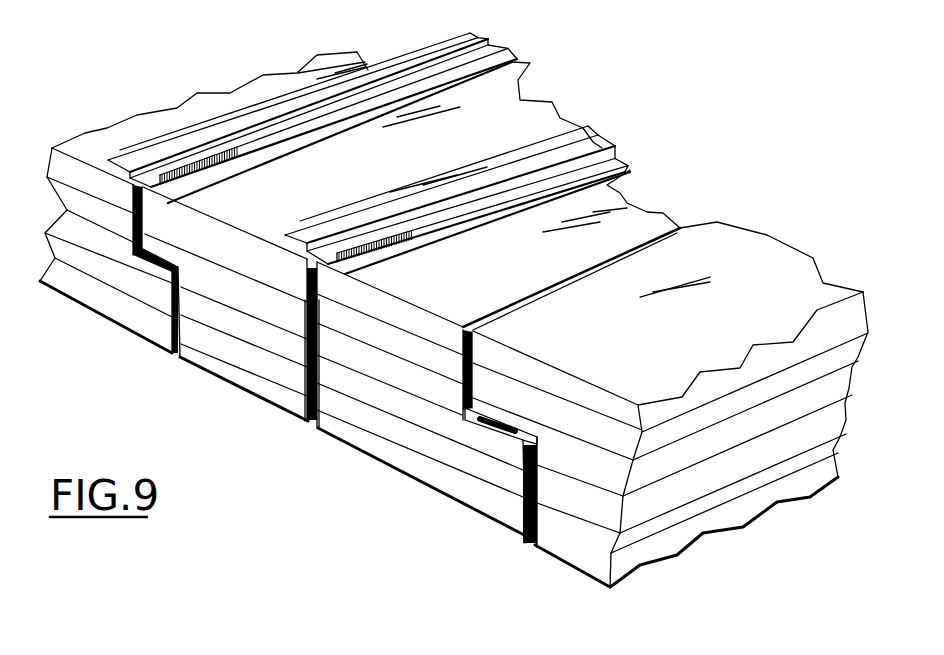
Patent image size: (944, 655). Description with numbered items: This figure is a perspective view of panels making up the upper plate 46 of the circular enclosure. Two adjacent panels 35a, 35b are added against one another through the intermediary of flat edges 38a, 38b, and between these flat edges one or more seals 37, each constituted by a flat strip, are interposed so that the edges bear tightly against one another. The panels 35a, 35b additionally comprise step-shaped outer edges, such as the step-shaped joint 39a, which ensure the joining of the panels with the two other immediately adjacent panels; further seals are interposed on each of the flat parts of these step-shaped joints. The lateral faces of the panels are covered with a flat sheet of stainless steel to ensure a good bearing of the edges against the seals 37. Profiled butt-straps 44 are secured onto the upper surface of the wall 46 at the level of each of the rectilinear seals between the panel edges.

The panel 35a is at (372, 241).
The panel 35b is at (592, 378).
The seal 37 is at (376, 343).
The flat edge 38a is at (302, 420).
The flat edge 38b is at (318, 424).
The step-shaped joint 39a is at (172, 352).
The profiled butt-strap 44 is at (390, 145).
The upper plate 46 is at (173, 123).